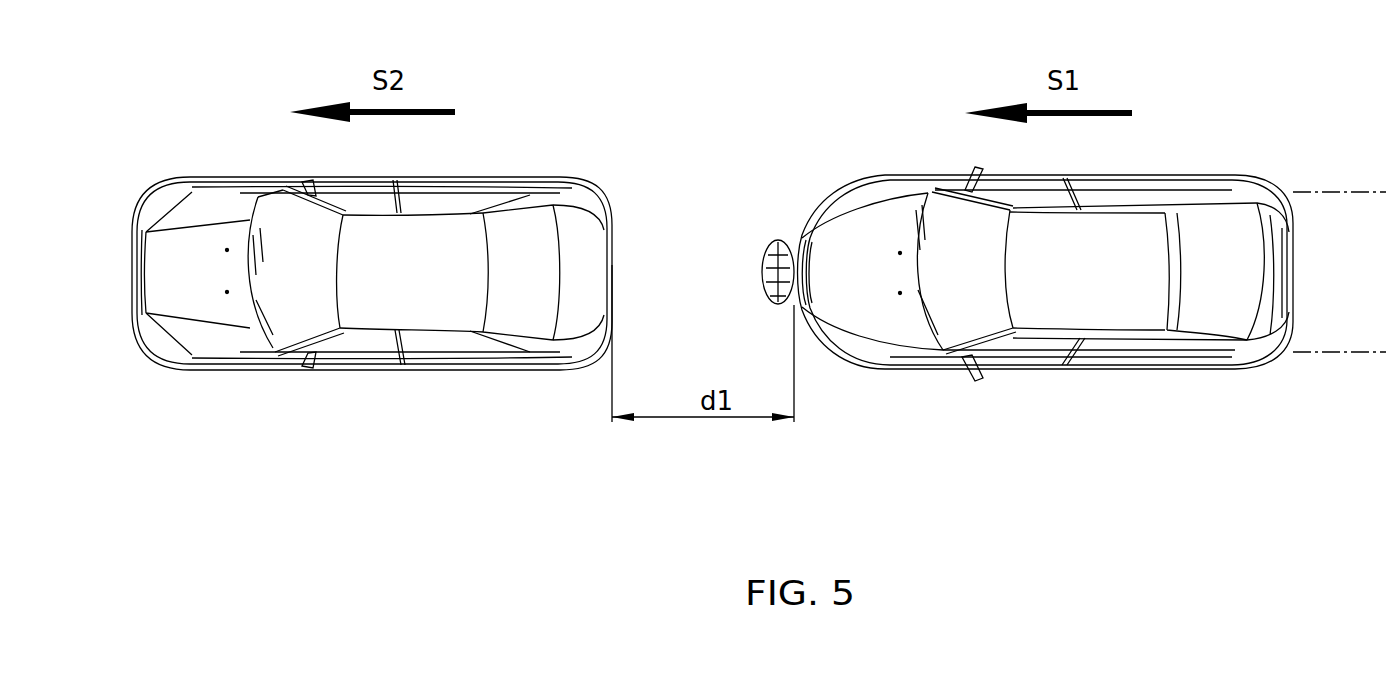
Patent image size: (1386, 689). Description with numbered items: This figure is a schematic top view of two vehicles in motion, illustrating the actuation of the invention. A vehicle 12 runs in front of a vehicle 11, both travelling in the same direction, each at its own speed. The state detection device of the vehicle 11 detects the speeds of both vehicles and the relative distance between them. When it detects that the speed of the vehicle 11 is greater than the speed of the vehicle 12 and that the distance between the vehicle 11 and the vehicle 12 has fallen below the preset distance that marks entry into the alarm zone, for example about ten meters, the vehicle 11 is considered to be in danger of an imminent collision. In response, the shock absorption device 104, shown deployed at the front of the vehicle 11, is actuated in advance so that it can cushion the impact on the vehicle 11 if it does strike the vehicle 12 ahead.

The vehicle 11 is at (1136, 230).
The vehicle 12 is at (407, 293).
The shock absorption device 104 is at (772, 240).